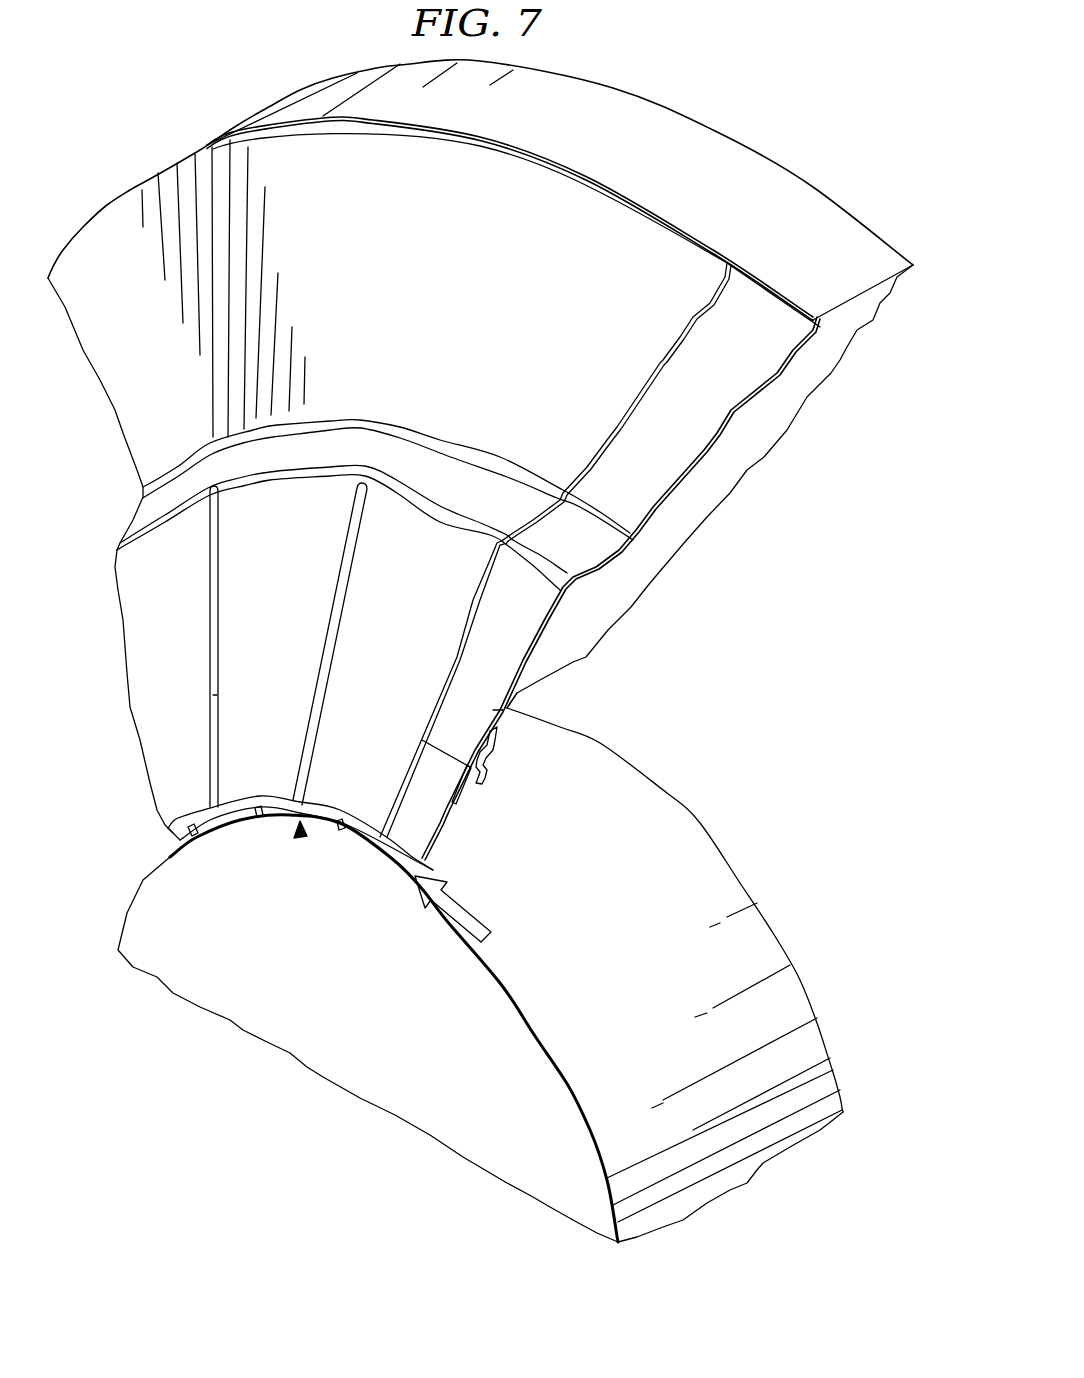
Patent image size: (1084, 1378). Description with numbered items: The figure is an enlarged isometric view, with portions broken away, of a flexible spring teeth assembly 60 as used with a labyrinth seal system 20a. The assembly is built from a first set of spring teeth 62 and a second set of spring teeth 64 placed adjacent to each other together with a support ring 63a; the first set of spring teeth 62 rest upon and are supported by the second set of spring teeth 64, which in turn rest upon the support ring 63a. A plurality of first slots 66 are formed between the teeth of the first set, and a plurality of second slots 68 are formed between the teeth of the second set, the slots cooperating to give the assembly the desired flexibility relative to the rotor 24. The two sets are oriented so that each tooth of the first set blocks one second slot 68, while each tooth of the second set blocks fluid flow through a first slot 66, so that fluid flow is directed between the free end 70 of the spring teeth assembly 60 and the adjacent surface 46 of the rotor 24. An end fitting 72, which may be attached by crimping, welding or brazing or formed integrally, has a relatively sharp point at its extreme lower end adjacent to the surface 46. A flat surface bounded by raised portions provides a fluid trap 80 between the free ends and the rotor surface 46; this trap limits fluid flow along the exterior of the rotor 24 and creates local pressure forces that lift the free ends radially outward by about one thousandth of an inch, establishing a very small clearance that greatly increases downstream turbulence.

The spring teeth assembly 60 is at (188, 103).
The first set of spring teeth 62 is at (587, 178).
The support ring 63a is at (787, 182).
The second set of spring teeth 64 is at (763, 278).
The first slots 66 is at (214, 594).
The second slots 68 is at (197, 838).
The free end 70 is at (299, 837).
The end fitting 72 is at (483, 780).
The fluid trap 80 is at (447, 813).
The labyrinth seal system 20a is at (480, 922).
The rotor 24 is at (333, 989).
The surface 46 is at (680, 815).